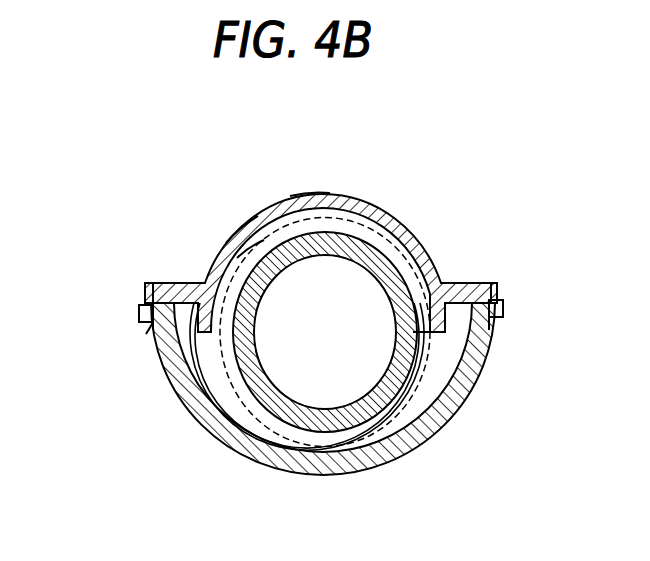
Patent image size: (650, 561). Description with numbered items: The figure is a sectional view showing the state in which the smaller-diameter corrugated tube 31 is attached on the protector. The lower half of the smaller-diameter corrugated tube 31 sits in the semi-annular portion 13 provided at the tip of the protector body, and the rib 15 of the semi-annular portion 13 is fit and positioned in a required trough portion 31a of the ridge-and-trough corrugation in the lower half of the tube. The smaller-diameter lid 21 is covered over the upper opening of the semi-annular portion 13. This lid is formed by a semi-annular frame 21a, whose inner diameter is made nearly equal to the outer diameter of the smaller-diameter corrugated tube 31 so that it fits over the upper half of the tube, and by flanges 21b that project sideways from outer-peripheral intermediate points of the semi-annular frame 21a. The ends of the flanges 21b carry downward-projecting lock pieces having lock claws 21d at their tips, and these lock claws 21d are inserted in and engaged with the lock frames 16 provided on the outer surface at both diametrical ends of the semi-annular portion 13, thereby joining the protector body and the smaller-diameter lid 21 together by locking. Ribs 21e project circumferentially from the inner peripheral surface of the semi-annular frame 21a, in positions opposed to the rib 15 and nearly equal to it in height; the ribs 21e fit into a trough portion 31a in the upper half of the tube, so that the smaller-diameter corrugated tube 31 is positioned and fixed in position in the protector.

The semi-annular portion 13 is at (401, 440).
The rib 15 is at (432, 402).
The lock frame 16 is at (139, 313).
The smaller-diameter lid 21 is at (358, 197).
The semi-annular frame 21a is at (310, 192).
The flange 21b is at (465, 283).
The lock claw 21d is at (146, 328).
The rib 21e is at (243, 224).
The smaller-diameter corrugated tube 31 is at (252, 402).
The trough portion 31a is at (234, 258).